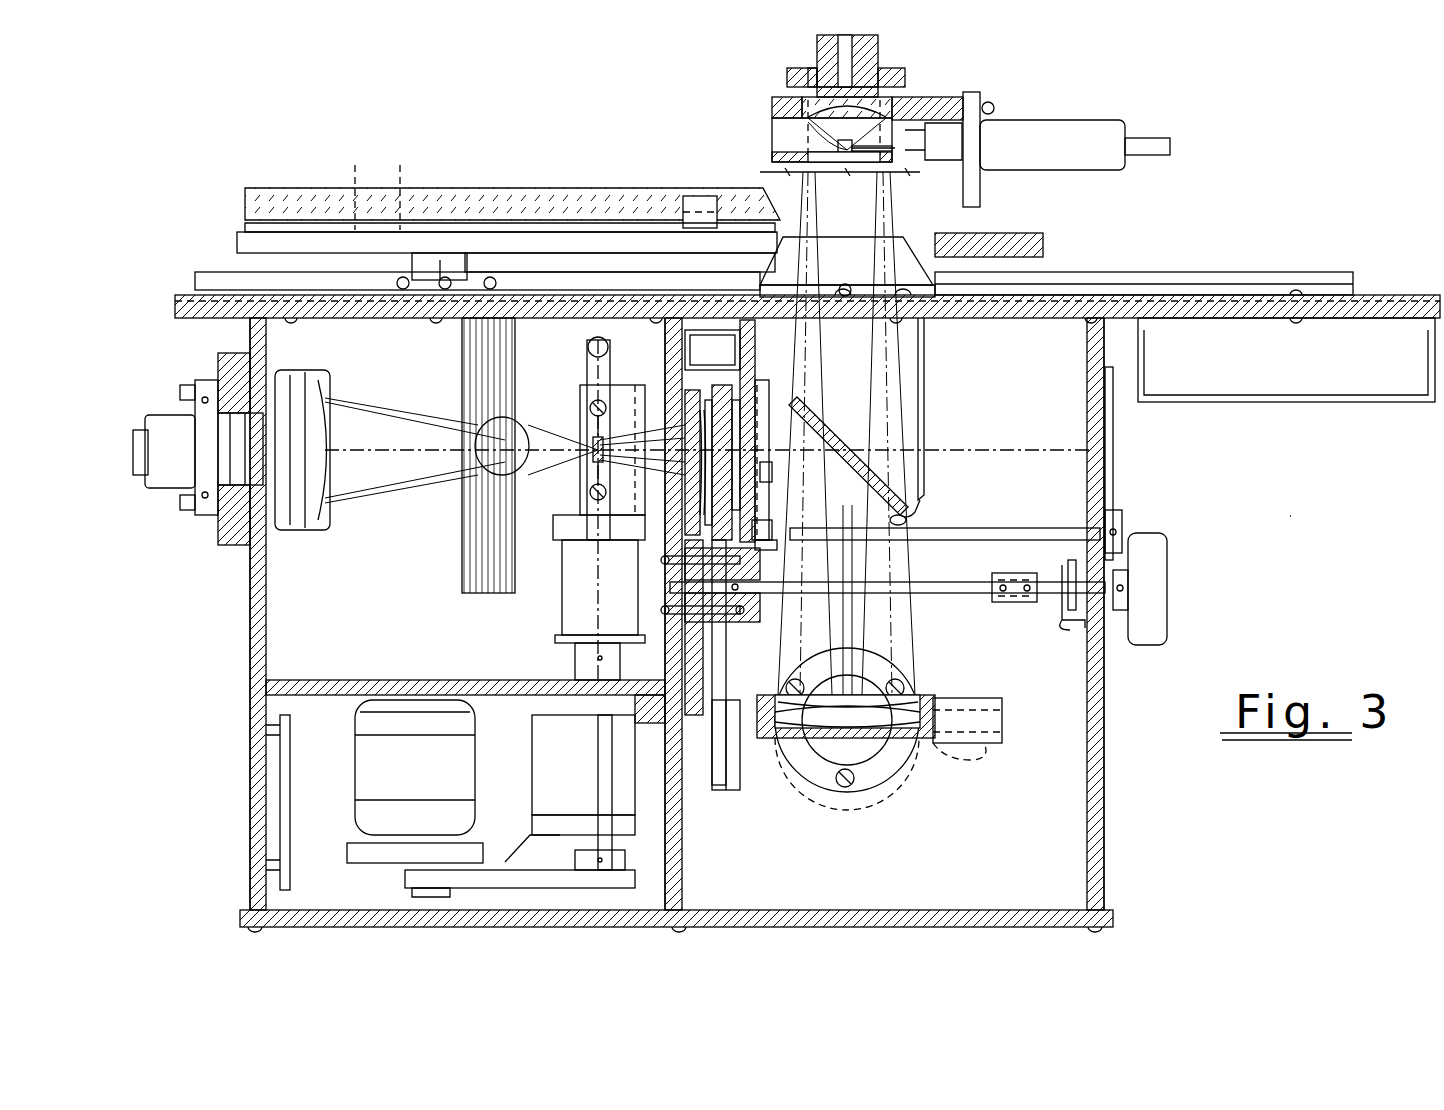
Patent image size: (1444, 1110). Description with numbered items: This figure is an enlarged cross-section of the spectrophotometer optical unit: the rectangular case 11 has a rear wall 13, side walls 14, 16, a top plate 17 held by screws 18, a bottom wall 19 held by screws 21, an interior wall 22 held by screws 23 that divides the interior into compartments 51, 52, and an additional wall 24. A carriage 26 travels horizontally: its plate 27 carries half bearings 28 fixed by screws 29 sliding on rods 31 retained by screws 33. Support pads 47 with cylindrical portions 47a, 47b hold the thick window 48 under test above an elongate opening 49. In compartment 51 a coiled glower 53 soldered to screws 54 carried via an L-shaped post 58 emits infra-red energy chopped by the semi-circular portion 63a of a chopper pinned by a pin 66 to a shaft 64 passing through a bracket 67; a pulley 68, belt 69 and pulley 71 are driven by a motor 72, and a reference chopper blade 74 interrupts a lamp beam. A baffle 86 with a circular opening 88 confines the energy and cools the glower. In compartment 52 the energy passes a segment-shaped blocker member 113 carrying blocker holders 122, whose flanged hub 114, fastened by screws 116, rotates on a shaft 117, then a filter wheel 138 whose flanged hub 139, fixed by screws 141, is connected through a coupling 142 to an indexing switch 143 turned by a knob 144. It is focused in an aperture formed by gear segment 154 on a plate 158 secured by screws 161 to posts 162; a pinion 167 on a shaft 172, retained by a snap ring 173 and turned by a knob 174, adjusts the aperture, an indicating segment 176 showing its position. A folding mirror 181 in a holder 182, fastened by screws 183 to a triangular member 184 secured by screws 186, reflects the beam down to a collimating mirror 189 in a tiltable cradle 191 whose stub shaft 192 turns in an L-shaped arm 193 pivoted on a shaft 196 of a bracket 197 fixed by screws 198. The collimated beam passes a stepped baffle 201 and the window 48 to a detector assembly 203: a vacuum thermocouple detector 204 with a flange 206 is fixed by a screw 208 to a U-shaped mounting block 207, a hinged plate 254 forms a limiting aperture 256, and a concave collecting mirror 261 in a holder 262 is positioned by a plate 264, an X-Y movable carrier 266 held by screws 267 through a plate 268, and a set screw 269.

The case 11 is at (1290, 516).
The rear wall 13 is at (470, 648).
The side wall 14 is at (250, 618).
The side wall 16 is at (1104, 725).
The top plate 17 is at (1392, 296).
The screws 18 is at (283, 292).
The bottom wall 19 is at (950, 915).
The screws 21 is at (255, 930).
The interior wall 22 is at (683, 862).
The screws 23 is at (665, 348).
The additional wall 24 is at (368, 690).
The carriage 26 is at (1036, 216).
The plate 27 is at (237, 246).
The half bearings 28 is at (455, 256).
The screws 29 is at (400, 282).
The cylindrical rods 31 is at (1295, 272).
The screws 33 is at (1292, 318).
The support pads 47 is at (445, 200).
The top cylindrical portion 47a is at (357, 165).
The cylindrical portion 47b is at (406, 191).
The thick window 48 is at (565, 188).
The elongate opening 49 is at (608, 235).
The first compartment 51 is at (262, 625).
The second compartment 52 is at (1165, 785).
The glower 53 is at (593, 440).
The brass screws 54 is at (590, 406).
The L-shaped post 58 is at (587, 358).
The upper semi-circular portion 63a is at (635, 385).
The shaft 64 is at (612, 765).
The pin 66 is at (598, 658).
The bracket 67 is at (530, 768).
The pulley 68 is at (575, 858).
The belt 69 is at (520, 880).
The pulley 71 is at (412, 892).
The motor 72 is at (435, 783).
The chopper blade 74 is at (638, 640).
The baffle 86 is at (462, 540).
The circular opening 88 is at (478, 470).
The segment-shaped member 113 is at (694, 715).
The flanged hub 114 is at (695, 615).
The screws 116 is at (663, 560).
The shaft 117 is at (940, 590).
The blocker holders 122 is at (696, 395).
The filter wheel 138 is at (720, 790).
The flanged hub 139 is at (740, 622).
The screws 141 is at (745, 610).
The coupling 142 is at (1012, 573).
The indexing switch 143 is at (1055, 634).
The knob 144 is at (1148, 618).
The gear segment 154 is at (760, 385).
The plate 158 is at (748, 320).
The screws 161 is at (762, 380).
The posts 162 is at (731, 360).
The pinion 167 is at (765, 552).
The shaft 172 is at (970, 530).
The snap ring 173 is at (763, 511).
The knob 174 is at (1122, 520).
The segment 176 is at (1113, 450).
The folding mirror 181 is at (880, 480).
The holder 182 is at (908, 510).
The screws 183 is at (908, 521).
The triangular-shaped member 184 is at (920, 390).
The screws 186 is at (900, 290).
The collimating mirror 189 is at (862, 700).
The cradle 191 is at (760, 738).
The stub shaft 192 is at (945, 738).
The L-shaped arm 193 is at (978, 698).
The shaft 196 is at (890, 760).
The bracket 197 is at (835, 750).
The screws 198 is at (795, 680).
The baffle 201 is at (912, 240).
The detector assembly 203 is at (708, 98).
The vacuum thermocouple detector 204 is at (1073, 159).
The flange 206 is at (980, 192).
The U-shaped mounting block 207 is at (948, 100).
The screw 208 is at (994, 106).
The plate 254 is at (772, 158).
The limiting aperture 256 is at (817, 175).
The concave first surface mirror 261 is at (815, 138).
The holder 262 is at (868, 80).
The plate 264 is at (820, 45).
The carrier 266 is at (817, 60).
The screws 267 is at (795, 80).
The plate 268 is at (927, 98).
The set screw 269 is at (808, 75).